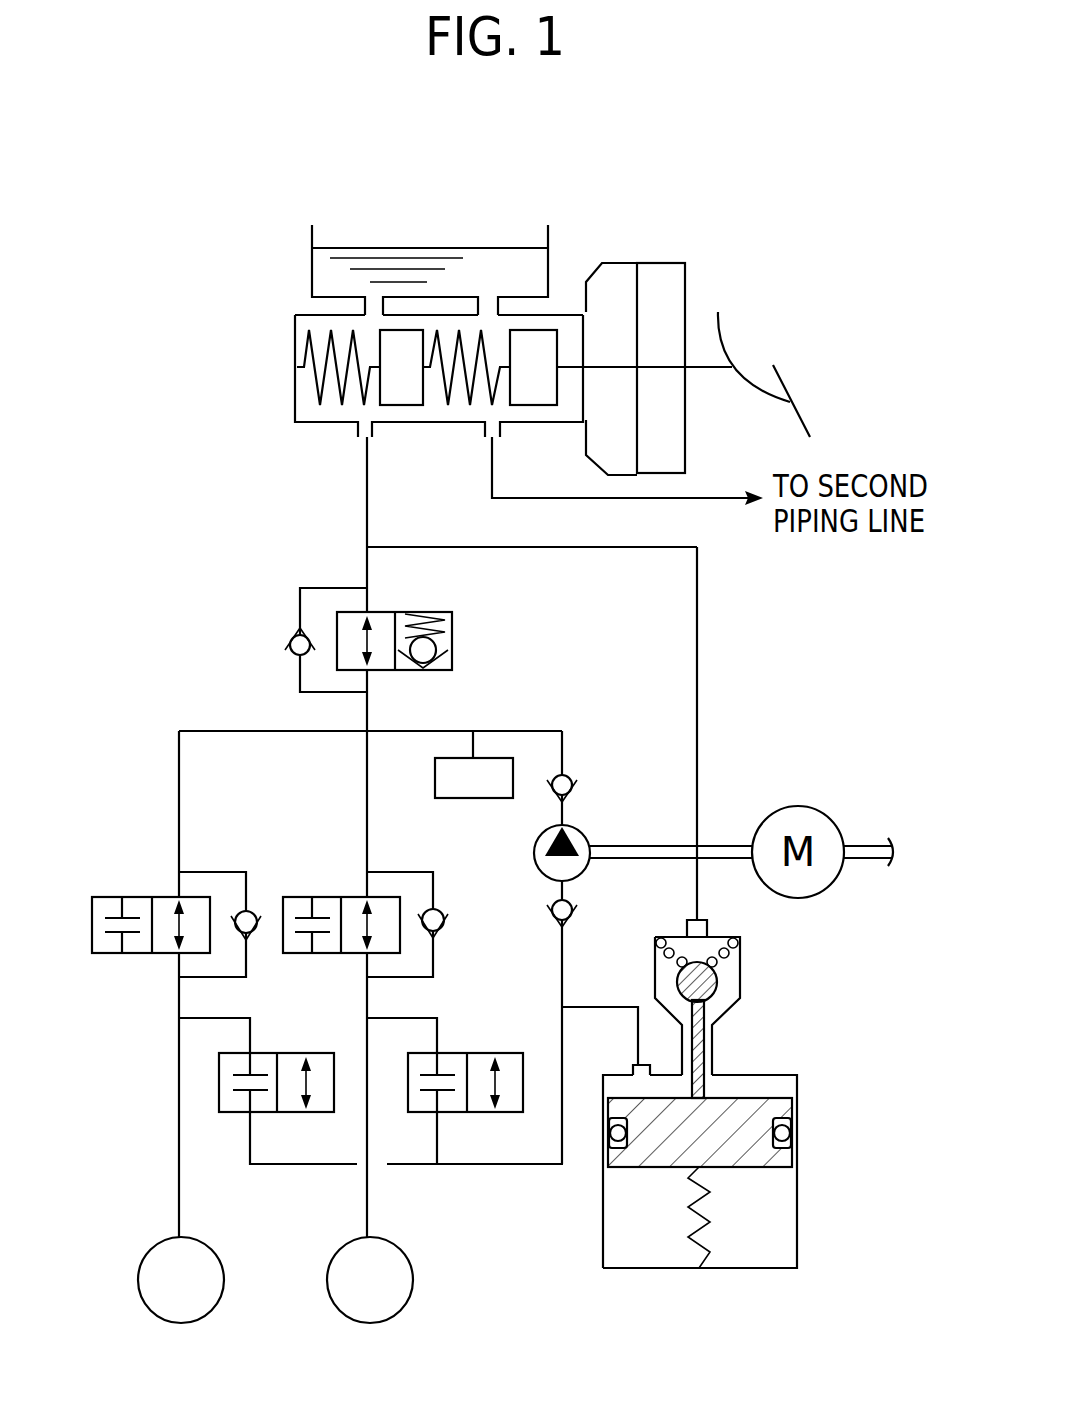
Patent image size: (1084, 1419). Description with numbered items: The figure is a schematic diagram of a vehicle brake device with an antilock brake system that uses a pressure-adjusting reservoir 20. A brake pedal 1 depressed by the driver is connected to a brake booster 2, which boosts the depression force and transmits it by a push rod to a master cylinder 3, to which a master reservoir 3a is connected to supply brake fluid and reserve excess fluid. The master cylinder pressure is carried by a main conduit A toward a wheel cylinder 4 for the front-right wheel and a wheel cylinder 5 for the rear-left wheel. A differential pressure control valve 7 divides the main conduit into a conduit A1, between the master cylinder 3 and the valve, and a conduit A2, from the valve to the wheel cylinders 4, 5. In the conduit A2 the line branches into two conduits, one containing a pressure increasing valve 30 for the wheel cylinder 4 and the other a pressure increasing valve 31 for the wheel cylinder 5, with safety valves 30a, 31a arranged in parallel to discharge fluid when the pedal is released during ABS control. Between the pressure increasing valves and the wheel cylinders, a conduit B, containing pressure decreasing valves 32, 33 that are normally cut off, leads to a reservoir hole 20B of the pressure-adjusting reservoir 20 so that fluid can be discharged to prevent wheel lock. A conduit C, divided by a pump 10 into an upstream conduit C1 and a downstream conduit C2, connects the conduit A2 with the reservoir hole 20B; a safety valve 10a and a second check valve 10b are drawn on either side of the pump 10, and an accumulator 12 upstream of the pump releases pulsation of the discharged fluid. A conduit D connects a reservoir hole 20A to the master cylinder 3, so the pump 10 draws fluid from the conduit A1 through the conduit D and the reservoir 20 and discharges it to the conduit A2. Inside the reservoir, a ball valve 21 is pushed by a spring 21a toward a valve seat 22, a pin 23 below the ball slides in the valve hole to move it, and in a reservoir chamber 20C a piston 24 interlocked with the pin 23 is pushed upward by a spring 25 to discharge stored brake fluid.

The brake pedal 1 is at (735, 335).
The brake booster 2 is at (660, 263).
The master cylinder 3 is at (292, 390).
The master reservoir 3a is at (420, 247).
The wheel cylinder 4 is at (226, 1281).
The wheel cylinder 5 is at (415, 1281).
The differential pressure control valve 7 is at (455, 628).
The rotary pump portion 10 is at (588, 838).
The safety valve 10a is at (580, 785).
The suction check valve 10b is at (578, 912).
The accumulator 12 is at (435, 770).
The pressure-adjusting reservoir 20 is at (734, 1111).
The reservoir hole 20A is at (705, 922).
The reservoir hole 20B is at (632, 1066).
The reservoir chamber 20C is at (758, 1088).
The ball valve 21 is at (720, 980).
The spring 21a is at (742, 945).
The valve seat 22 is at (735, 1008).
The pin 23 is at (705, 1055).
The piston 24 is at (745, 1155).
The spring 25 is at (705, 1228).
The pressure increasing valve 30 is at (135, 897).
The safety valve 30a is at (252, 908).
The pressure increasing valve 31 is at (327, 897).
The safety valve 31a is at (440, 908).
The pressure decreasing valve 32 is at (318, 1053).
The pressure decreasing valve 33 is at (506, 1053).
The main conduit A is at (362, 483).
The conduit A1 is at (366, 556).
The conduit A2 is at (177, 765).
The conduit B is at (322, 1168).
The conduit C is at (513, 728).
The conduit C1 is at (558, 728).
The conduit C2 is at (566, 948).
The conduit D is at (699, 690).